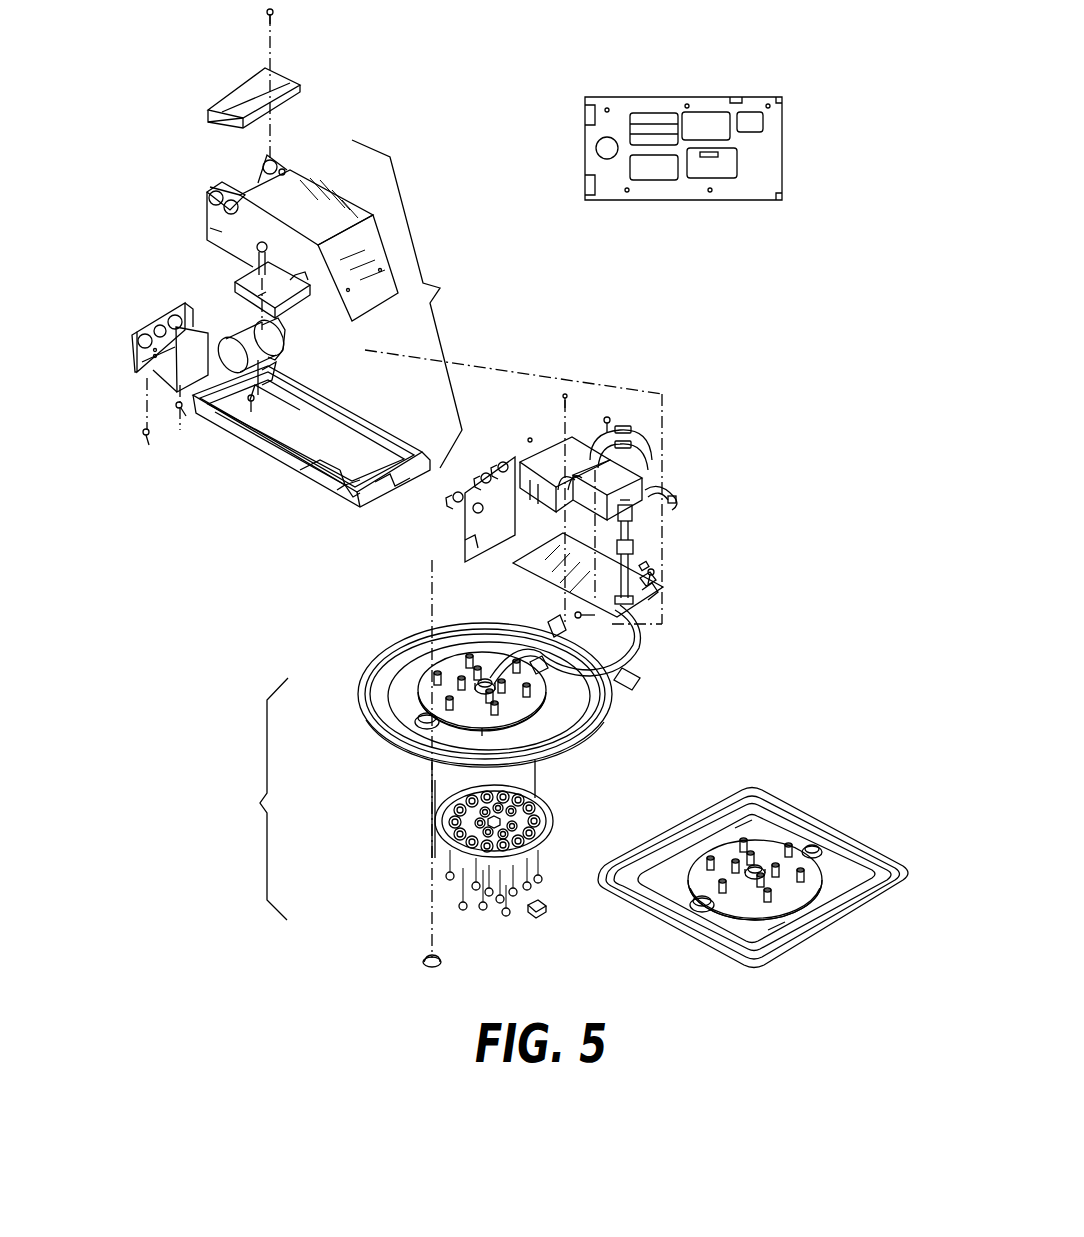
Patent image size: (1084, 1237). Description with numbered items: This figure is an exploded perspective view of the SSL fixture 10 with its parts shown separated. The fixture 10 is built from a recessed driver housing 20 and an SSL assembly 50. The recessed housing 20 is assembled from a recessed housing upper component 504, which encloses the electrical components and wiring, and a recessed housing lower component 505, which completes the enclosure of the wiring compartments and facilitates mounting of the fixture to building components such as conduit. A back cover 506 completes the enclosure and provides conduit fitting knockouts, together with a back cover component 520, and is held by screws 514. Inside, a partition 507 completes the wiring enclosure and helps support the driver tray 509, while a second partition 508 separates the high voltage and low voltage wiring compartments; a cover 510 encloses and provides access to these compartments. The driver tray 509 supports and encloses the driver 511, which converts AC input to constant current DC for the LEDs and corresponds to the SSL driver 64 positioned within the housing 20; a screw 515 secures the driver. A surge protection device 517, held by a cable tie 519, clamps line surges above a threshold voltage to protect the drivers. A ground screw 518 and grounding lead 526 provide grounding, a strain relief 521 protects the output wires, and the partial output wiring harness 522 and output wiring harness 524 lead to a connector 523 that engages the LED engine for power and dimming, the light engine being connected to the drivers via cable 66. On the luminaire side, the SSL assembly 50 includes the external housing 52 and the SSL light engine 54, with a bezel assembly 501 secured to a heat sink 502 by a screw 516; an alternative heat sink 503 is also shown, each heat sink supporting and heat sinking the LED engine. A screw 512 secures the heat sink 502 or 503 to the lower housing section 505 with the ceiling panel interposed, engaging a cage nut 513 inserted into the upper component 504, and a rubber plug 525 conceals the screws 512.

The SSL fixture 10 is at (848, 327).
The recessed driver housing 20 is at (413, 304).
The SSL assembly 50 is at (256, 799).
The external housing 52 is at (392, 735).
The SSL light engine 54 is at (553, 822).
The SSL driver 64 is at (650, 452).
The cable 66 is at (640, 647).
The bezel assembly 501 is at (568, 842).
The heat sink 502 is at (608, 714).
The alternative heat sink 503 is at (840, 818).
The recessed housing upper component 504 is at (200, 180).
The recessed housing lower component 505 is at (170, 406).
The back cover 506 is at (124, 368).
The partition 507 is at (508, 456).
The partition 508 is at (165, 379).
The driver tray 509 is at (652, 588).
The cover 510 is at (202, 96).
The driver 511 is at (645, 478).
The screw 512 is at (425, 872).
The cage nut 513 is at (245, 247).
The screw 514 is at (262, 14).
The screw 515 is at (616, 410).
The screw 516 is at (516, 922).
The surge protection device 517 is at (275, 357).
The ground screw 518 is at (245, 410).
The cable tie 519 is at (278, 336).
The back cover component 520 is at (124, 330).
The strain relief 521 is at (652, 549).
The output wiring harness (partial) 522 is at (658, 522).
The connector 523 is at (480, 682).
The output wiring harness 524 is at (506, 690).
The rubber plug 525 is at (410, 956).
The grounding lead 526 is at (665, 580).